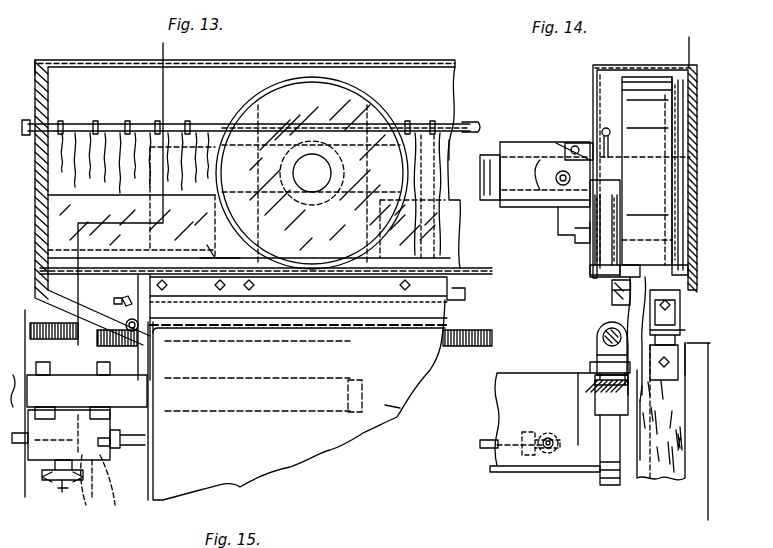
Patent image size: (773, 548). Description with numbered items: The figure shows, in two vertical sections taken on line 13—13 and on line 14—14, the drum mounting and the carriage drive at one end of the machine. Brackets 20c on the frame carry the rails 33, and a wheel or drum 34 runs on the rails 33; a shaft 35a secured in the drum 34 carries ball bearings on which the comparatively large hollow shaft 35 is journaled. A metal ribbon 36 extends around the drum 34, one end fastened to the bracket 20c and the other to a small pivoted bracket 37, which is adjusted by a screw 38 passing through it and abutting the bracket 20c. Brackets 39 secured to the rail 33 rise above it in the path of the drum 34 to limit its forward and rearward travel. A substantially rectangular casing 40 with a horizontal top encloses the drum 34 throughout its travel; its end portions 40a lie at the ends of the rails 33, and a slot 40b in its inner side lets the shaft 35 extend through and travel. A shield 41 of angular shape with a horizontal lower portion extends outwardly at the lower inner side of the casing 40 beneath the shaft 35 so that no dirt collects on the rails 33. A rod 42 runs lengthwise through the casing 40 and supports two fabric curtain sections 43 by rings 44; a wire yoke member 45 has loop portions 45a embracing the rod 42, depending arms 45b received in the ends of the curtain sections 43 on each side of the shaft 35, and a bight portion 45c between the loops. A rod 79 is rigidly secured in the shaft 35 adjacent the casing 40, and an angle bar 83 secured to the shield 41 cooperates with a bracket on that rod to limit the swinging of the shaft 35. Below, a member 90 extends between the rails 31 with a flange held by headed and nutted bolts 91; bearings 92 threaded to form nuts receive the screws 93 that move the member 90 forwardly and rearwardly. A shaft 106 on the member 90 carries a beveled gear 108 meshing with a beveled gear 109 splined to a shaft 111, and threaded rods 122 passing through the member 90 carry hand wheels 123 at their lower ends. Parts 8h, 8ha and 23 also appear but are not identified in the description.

In FIG. 13, the casing 40 is at (396, 61).
In FIG. 14, the casing 40 is at (693, 230).
In FIG. 13, the end portions of casing 40a is at (40, 62).
In FIG. 13, the slot 40b is at (447, 152).
In FIG. 13, the section line 14— 14 is at (172, 54).
In FIG. 14, the section line 13— 13 is at (681, 54).
In FIG. 13, the curtain sections 43 is at (62, 124).
In FIG. 14, the curtain sections 43 is at (594, 148).
In FIG. 13, the rings 44 is at (188, 125).
In FIG. 13, the rod 42 is at (462, 124).
In FIG. 14, the rod 42 is at (606, 126).
In FIG. 13, the wheel or drum 34 is at (376, 108).
In FIG. 14, the wheel or drum 34 is at (640, 92).
In FIG. 13, the yoke member 45 is at (360, 205).
In FIG. 13, the eyelets or loop portions 45a is at (259, 110).
In FIG. 13, the depending arms 45b is at (313, 179).
In FIG. 13, the intermediate or bight portion 45c is at (346, 166).
In FIG. 13, the metal ribbon 36 is at (452, 268).
In FIG. 14, the metal ribbon 36 is at (692, 110).
In FIG. 13, the rails 33 is at (462, 290).
In FIG. 14, the rails 33 is at (622, 314).
In FIG. 13, the brackets 39 is at (207, 246).
In FIG. 14, the brackets 39 is at (612, 300).
In FIG. 13, the pivoted bracket 37 is at (130, 310).
In FIG. 14, the pivoted bracket 37 is at (690, 356).
In FIG. 13, the screw 38 is at (126, 326).
In FIG. 14, the screw 38 is at (672, 306).
In FIG. 13, the bearings 92 is at (75, 340).
In FIG. 14, the bearings 92 is at (604, 332).
In FIG. 13, the screws 93 is at (108, 340).
In FIG. 14, the screws 93 is at (600, 342).
In FIG. 13, the rails 31 is at (148, 405).
In FIG. 14, the rails 31 is at (630, 400).
In FIG. 13, the brackets 20c is at (392, 395).
In FIG. 14, the brackets 20c is at (672, 415).
In FIG. 13, the headed and nutted bolts 91 is at (79, 411).
In FIG. 14, the headed and nutted bolts 91 is at (598, 377).
In FIG. 13, the shaft 111 is at (125, 440).
In FIG. 14, the shaft 111 is at (546, 437).
In FIG. 13, the beveled gear 109 is at (117, 445).
In FIG. 14, the beveled gear 109 is at (553, 428).
In FIG. 13, the member 90 is at (95, 462).
In FIG. 14, the member 90 is at (512, 468).
In FIG. 13, the shaft 106 is at (76, 471).
In FIG. 14, the shaft 106 is at (496, 450).
In FIG. 13, the beveled gear 108 is at (88, 485).
In FIG. 14, the beveled gear 108 is at (530, 429).
In FIG. 13, the hand wheels 123 is at (57, 480).
In FIG. 13, the rods 122 is at (66, 492).
In FIG. 14, the hollow shaft 35 is at (522, 152).
In FIG. 14, the shaft 35a is at (482, 200).
In FIG. 14, the rod 79 is at (556, 180).
In FIG. 14, the bracket 8h is at (560, 236).
In FIG. 14, the bracket flange 8ha is at (575, 243).
In FIG. 14, the angle bar 83 is at (590, 262).
In FIG. 14, the shield 41 is at (598, 272).
In FIG. 14, the bolt 23 is at (607, 472).